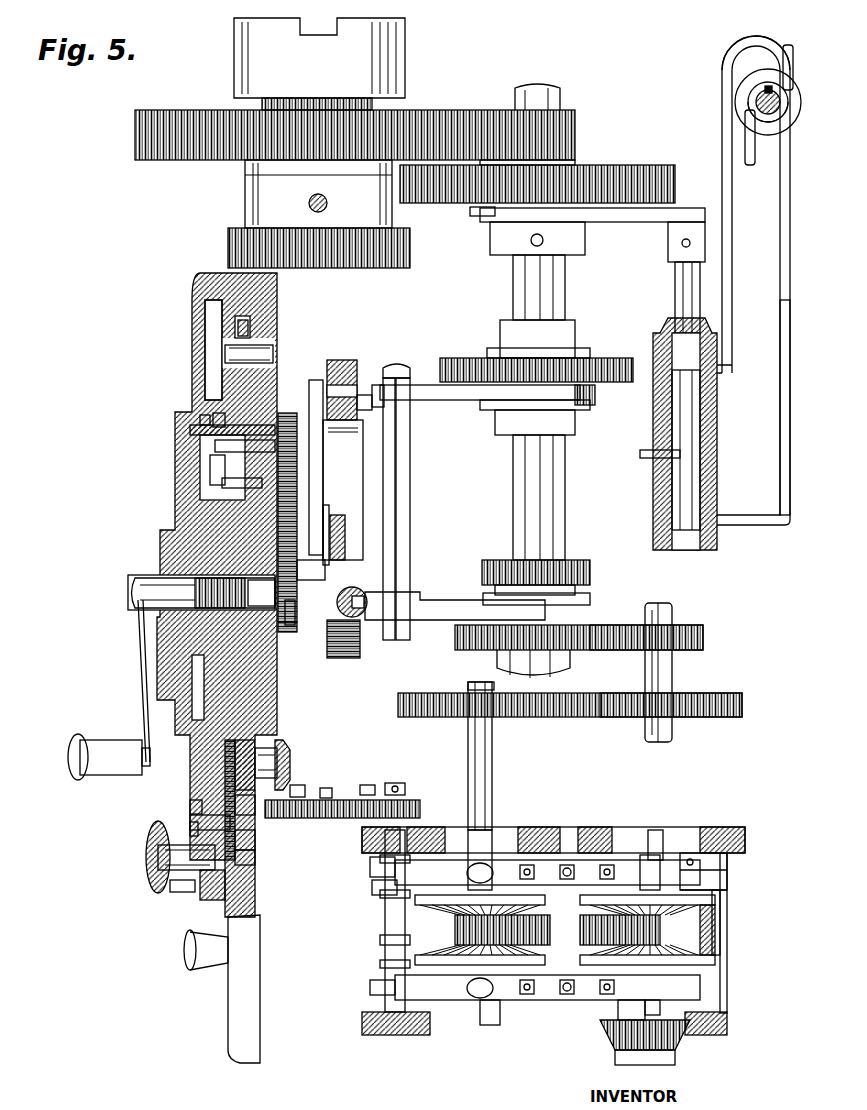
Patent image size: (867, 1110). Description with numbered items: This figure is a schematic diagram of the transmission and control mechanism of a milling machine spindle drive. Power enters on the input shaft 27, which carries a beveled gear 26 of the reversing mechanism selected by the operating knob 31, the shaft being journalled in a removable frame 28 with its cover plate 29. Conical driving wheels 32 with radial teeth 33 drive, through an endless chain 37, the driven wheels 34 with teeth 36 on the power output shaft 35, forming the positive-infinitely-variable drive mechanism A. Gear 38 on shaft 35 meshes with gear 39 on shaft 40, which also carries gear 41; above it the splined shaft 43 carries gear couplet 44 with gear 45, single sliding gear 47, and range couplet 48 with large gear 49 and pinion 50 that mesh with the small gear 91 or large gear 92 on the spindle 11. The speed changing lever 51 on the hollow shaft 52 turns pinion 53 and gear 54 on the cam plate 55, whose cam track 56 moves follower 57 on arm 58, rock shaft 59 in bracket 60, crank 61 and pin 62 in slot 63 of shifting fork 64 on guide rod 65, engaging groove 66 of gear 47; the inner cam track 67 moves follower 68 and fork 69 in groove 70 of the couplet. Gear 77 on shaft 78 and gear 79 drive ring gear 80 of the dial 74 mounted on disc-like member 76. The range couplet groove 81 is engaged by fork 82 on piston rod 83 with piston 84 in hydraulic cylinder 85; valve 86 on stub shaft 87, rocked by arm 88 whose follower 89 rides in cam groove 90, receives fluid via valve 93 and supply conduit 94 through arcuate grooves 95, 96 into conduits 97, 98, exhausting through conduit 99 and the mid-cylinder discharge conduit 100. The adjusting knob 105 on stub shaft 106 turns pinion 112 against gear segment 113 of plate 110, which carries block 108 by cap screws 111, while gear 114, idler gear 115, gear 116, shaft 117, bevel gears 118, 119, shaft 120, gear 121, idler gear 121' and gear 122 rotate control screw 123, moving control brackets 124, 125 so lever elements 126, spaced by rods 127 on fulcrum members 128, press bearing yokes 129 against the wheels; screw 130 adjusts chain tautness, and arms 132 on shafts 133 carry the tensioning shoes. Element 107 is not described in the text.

The tool supporting spindle 11 is at (405, 58).
The large gear 92 is at (433, 118).
The pinion 50 is at (573, 130).
The gear couplet 48 is at (594, 156).
The large gear 49 is at (655, 180).
The small gear 91 is at (410, 255).
The groove 81 is at (482, 214).
The shifting fork 82 is at (637, 222).
The piston rod 83 is at (680, 292).
The splined shaft 43 is at (510, 517).
The single sliding gear 47 is at (480, 365).
The shifting fork 64 is at (455, 400).
The groove 66 is at (595, 393).
The slot 63 is at (410, 420).
The guide rod 65 is at (412, 480).
The pin 62 is at (378, 390).
The bracket 60 is at (318, 380).
The rock shaft 59 is at (342, 395).
The arm 58 is at (320, 455).
The cam follower 57 is at (345, 532).
The gear 54 is at (300, 512).
The crank 61 is at (362, 410).
The gear 77 is at (285, 420).
The disc-like member 76 is at (185, 540).
The arm 88 is at (220, 385).
The valve 86 is at (248, 324).
The stub shaft 87 is at (270, 355).
The cam groove 90 is at (210, 418).
The cam follower 89 is at (215, 420).
The speed indicator dial 74 is at (195, 428).
The shaft 78 is at (225, 445).
The gear 79 is at (220, 468).
The ring gear 80 is at (225, 487).
The valve 93 is at (215, 575).
The hollow shaft 52 is at (150, 600).
The speed changing lever 51 is at (140, 690).
The cam track 56 is at (325, 560).
The cam track 67 is at (295, 600).
The speed changing pinion 53 is at (290, 632).
The cam plate 55 is at (340, 660).
The cam follower 68 is at (358, 598).
The shifting fork 69 is at (450, 610).
The groove 70 is at (590, 610).
The gear 45 is at (610, 650).
The gear 41 is at (695, 625).
The gear couplet 44 is at (487, 656).
The shaft 40 is at (672, 672).
The gear 38 is at (540, 712).
The gear 39 is at (700, 718).
The power output shaft 35 is at (495, 775).
The driven wheels 34 is at (495, 890).
The hydraulic cylinder 85 is at (653, 505).
The piston 84 is at (670, 415).
The discharge conduit 100 is at (645, 452).
The conduit 98 is at (730, 272).
The conduit 97 is at (783, 332).
The discharge conduit 99 is at (778, 45).
The arcuate groove 96 is at (768, 85).
The arcuate groove 95 is at (770, 135).
The supply conduit 94 is at (750, 166).
The plate 110 is at (240, 712).
The gear 116 is at (258, 745).
The shaft 117 is at (290, 748).
The bevel gear 118 is at (290, 765).
The bevel gear 119 is at (300, 790).
The shaft 120 is at (325, 798).
The gear 121 is at (381, 773).
The idler gear 121' is at (411, 777).
The gear 122 is at (418, 800).
The idler gear 115 is at (255, 808).
The gear segment 113 is at (255, 835).
The gear 114 is at (255, 855).
The cap screws 111 is at (192, 806).
The block 108 is at (195, 818).
The plate 107 is at (190, 822).
The adjusting knob 105 is at (150, 860).
The stub shaft 106 is at (175, 888).
The pinion 112 is at (205, 890).
The cover plate 29 is at (245, 948).
The operating knob 31 is at (188, 958).
The removable frame 28 is at (735, 827).
The lever elements 126 is at (435, 860).
The rods 127 is at (528, 865).
The fulcrum member 128 is at (568, 865).
The endless chain 37 is at (445, 930).
The radial teeth 33 is at (722, 930).
The staggered teeth 36 is at (383, 958).
The control bracket 124 is at (375, 865).
The control screw 123 is at (382, 888).
The control bracket 125 is at (378, 988).
The power input shaft 27 is at (650, 855).
The conical driving wheels 32 is at (690, 858).
The arms 132 is at (730, 872).
The shafts 133 is at (718, 898).
The bearing yokes 129 is at (675, 827).
The screw 130 is at (618, 1015).
The beveled gear 26 is at (610, 1045).
The positive-infinitely-variable speed drive mechanism A is at (574, 799).